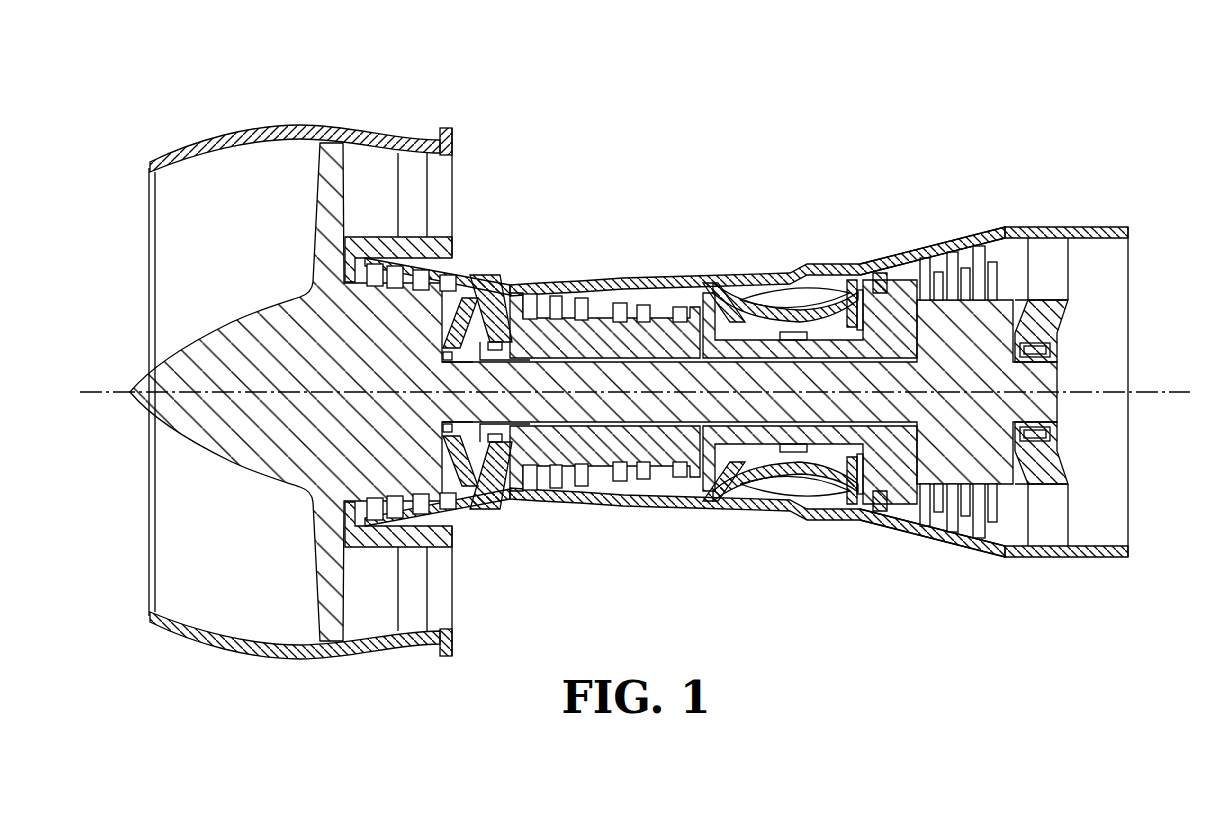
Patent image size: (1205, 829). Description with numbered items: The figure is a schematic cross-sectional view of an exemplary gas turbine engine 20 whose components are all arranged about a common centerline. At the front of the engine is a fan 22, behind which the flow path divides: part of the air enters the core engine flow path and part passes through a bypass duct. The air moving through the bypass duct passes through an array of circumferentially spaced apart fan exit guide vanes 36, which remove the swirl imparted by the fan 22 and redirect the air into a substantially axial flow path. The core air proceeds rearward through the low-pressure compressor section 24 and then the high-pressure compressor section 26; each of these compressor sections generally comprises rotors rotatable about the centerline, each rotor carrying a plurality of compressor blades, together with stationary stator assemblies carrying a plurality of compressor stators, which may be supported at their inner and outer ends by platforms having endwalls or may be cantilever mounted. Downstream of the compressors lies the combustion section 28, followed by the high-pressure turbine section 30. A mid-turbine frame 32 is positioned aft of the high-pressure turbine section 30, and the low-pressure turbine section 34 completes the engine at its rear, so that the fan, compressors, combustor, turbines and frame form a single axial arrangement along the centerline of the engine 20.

The gas turbine engine 20 is at (667, 237).
The fan 22 is at (316, 196).
The low-pressure compressor section 24 is at (379, 252).
The high-pressure compressor section 26 is at (578, 270).
The combustion section 28 is at (781, 257).
The high-pressure turbine section 30 is at (904, 243).
The mid-turbine frame 32 is at (927, 241).
The low-pressure turbine section 34 is at (1011, 219).
The fan exit guide vanes 36 is at (413, 190).